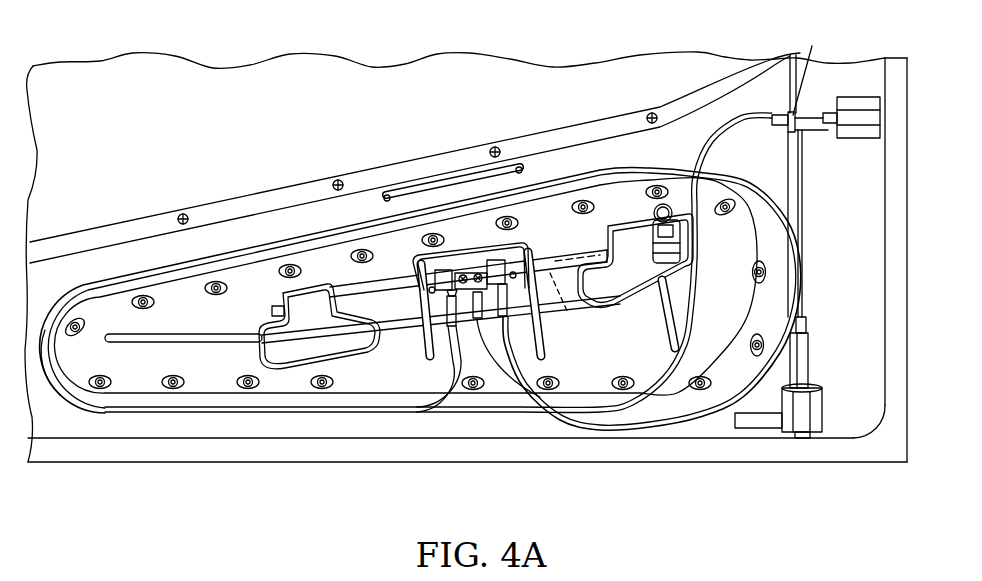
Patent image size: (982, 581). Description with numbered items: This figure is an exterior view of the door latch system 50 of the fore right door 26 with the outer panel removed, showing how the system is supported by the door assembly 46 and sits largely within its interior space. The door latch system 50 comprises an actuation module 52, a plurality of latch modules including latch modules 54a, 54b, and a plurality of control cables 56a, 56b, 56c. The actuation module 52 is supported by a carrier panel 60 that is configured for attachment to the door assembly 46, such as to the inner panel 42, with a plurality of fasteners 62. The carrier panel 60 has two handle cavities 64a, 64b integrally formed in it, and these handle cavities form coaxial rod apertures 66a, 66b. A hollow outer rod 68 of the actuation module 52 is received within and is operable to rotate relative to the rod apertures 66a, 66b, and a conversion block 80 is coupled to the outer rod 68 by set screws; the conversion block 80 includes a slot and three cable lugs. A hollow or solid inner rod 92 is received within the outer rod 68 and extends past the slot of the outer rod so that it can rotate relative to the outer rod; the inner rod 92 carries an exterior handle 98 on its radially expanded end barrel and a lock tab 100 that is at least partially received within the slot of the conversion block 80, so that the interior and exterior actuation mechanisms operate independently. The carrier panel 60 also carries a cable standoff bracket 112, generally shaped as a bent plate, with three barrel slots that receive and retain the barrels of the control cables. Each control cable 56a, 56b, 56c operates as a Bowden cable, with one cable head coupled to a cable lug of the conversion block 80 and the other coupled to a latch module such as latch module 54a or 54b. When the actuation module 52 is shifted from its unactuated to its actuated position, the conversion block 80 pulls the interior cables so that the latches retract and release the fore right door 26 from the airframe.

The fore right door 26 is at (836, 75).
The inner panel 42 is at (870, 358).
The door assembly 46 is at (867, 290).
The door latch system 50 is at (490, 119).
The actuation module 52 is at (567, 249).
The latch module 54a is at (822, 408).
The latch module 54b is at (857, 143).
The control cable 56a is at (800, 262).
The control cable 56b is at (557, 420).
The control cable 56c is at (500, 382).
The carrier panel 60 is at (213, 370).
The fasteners 62 is at (100, 392).
The handle cavity 64a is at (300, 353).
The handle cavity 64b is at (634, 292).
The rod aperture 66a is at (277, 310).
The rod aperture 66b is at (578, 243).
The outer rod 68 is at (397, 287).
The conversion block 80 is at (446, 271).
The inner rod 92 is at (565, 308).
The exterior handle 98 is at (668, 205).
The lock tab 100 is at (472, 273).
The cable standoff bracket 112 is at (433, 322).